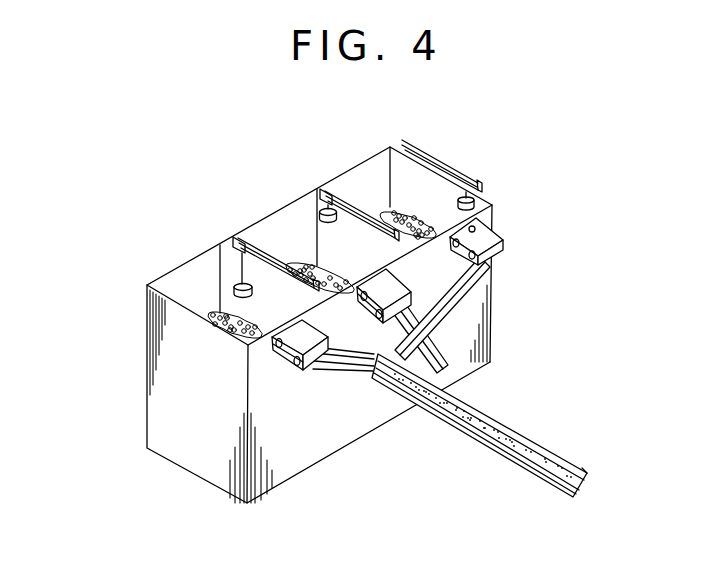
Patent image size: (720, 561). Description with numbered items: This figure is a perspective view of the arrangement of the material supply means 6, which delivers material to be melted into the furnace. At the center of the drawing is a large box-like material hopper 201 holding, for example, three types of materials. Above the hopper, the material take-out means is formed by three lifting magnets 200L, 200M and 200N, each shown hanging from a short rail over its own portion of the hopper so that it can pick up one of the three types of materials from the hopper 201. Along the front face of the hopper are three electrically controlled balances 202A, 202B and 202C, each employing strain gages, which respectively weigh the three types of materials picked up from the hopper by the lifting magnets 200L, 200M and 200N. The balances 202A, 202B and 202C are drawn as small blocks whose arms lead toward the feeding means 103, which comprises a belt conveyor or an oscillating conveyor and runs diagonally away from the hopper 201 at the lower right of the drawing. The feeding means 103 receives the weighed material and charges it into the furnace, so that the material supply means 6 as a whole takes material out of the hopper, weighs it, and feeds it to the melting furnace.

The material supply means 6 is at (333, 323).
The material hopper 201 is at (167, 371).
The lifting magnet 200L is at (220, 267).
The lifting magnet 200M is at (315, 198).
The lifting magnet 200N is at (390, 173).
The electrically controlled balance 202A is at (312, 371).
The electrically controlled balance 202B is at (412, 281).
The electrically controlled balance 202C is at (494, 234).
The feeding means 103 is at (531, 473).